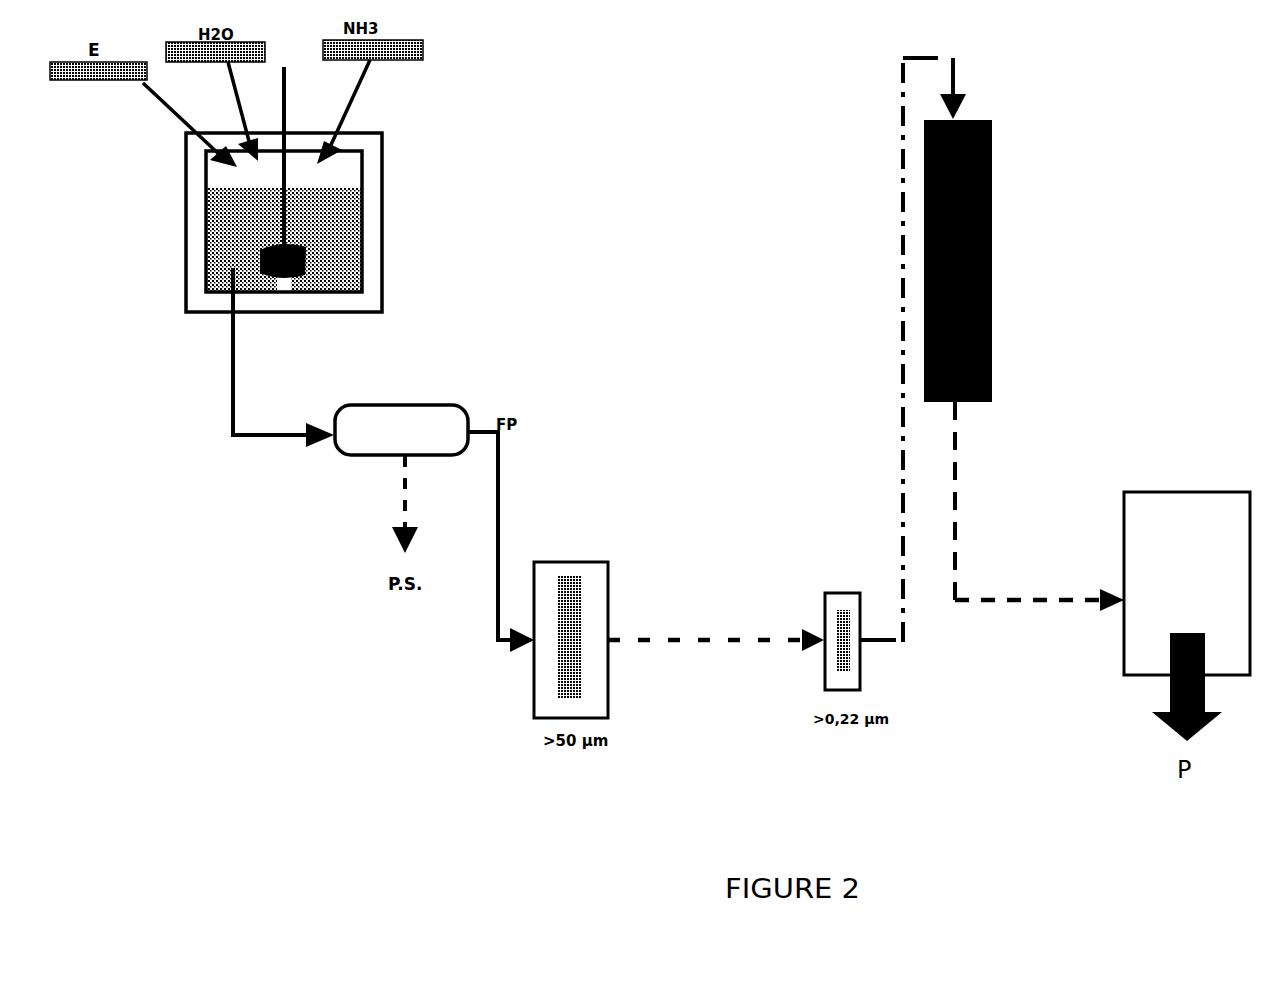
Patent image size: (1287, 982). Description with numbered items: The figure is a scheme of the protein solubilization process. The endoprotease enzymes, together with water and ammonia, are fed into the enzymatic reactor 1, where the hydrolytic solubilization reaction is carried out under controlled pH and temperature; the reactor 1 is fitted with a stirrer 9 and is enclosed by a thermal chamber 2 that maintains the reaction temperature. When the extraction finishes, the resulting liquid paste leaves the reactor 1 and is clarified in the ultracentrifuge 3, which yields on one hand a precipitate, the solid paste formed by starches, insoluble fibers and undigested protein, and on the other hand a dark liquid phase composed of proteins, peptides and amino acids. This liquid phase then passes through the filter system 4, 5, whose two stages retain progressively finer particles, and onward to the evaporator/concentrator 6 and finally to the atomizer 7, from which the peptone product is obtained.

The enzymatic reactor 1 is at (252, 221).
The thermal chamber 2 is at (350, 305).
The ultracentrifuge 3 is at (401, 430).
The filter system 4 is at (571, 627).
The filter system 5 is at (842, 629).
The evaporator/concentrator 6 is at (981, 261).
The atomizer 7 is at (1187, 616).
The stirrer 9 is at (290, 172).